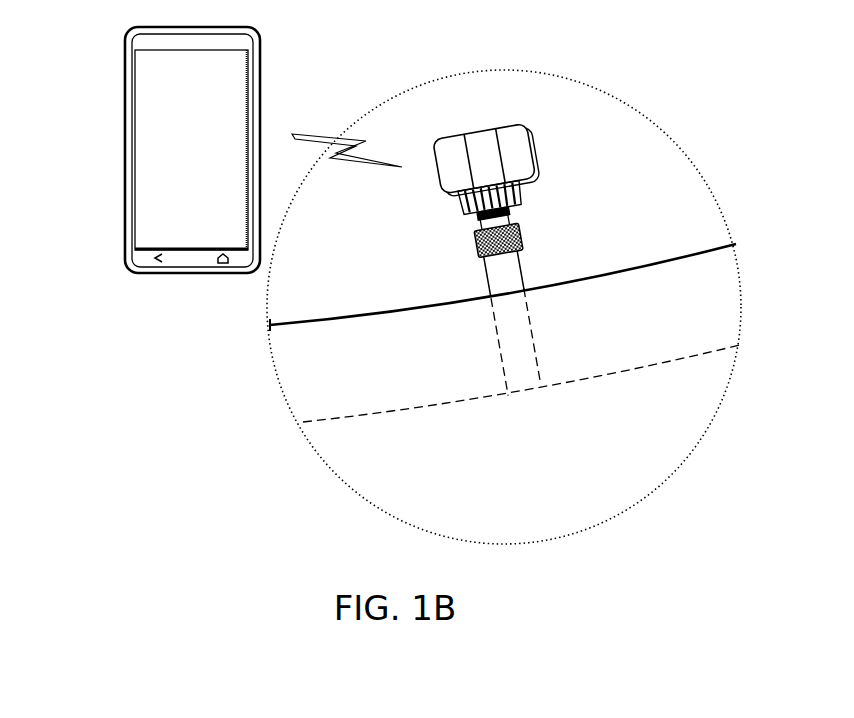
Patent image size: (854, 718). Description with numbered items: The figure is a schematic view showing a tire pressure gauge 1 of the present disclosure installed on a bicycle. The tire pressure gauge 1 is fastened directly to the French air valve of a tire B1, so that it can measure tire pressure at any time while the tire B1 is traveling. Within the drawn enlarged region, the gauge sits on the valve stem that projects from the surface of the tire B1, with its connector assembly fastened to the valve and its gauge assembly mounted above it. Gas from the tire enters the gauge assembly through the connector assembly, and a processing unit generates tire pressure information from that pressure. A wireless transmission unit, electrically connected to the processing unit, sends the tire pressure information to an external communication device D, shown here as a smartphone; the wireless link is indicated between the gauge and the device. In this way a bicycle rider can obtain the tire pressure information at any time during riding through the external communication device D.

The tire pressure gauge 1 is at (523, 212).
The tire B1 is at (403, 333).
The external communication device D is at (127, 148).